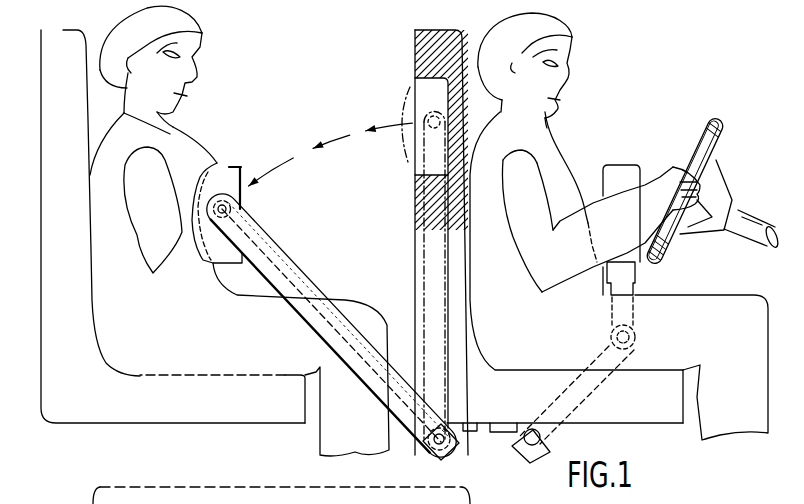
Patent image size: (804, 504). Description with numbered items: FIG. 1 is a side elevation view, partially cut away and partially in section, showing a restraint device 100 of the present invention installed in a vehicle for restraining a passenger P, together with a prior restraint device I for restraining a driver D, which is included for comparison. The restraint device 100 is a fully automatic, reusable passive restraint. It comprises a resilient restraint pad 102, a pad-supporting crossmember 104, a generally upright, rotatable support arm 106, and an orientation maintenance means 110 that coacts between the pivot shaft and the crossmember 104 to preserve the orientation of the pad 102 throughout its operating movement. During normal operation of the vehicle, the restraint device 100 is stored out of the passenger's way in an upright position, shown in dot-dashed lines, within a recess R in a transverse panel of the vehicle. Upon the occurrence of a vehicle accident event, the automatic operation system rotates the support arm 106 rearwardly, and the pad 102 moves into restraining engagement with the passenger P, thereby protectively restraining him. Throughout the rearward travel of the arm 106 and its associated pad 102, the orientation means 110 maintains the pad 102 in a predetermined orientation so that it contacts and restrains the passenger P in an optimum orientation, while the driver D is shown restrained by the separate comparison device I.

The passenger P is at (203, 42).
The driver D is at (583, 67).
The recess R is at (421, 88).
The steering wheel I is at (647, 132).
The restraint device 100 is at (241, 151).
The resilient restraint pad 102 is at (200, 160).
The pad-supporting crossmember 104 is at (246, 205).
The support arm 106 is at (292, 245).
The orientation maintenance means 110 is at (293, 322).